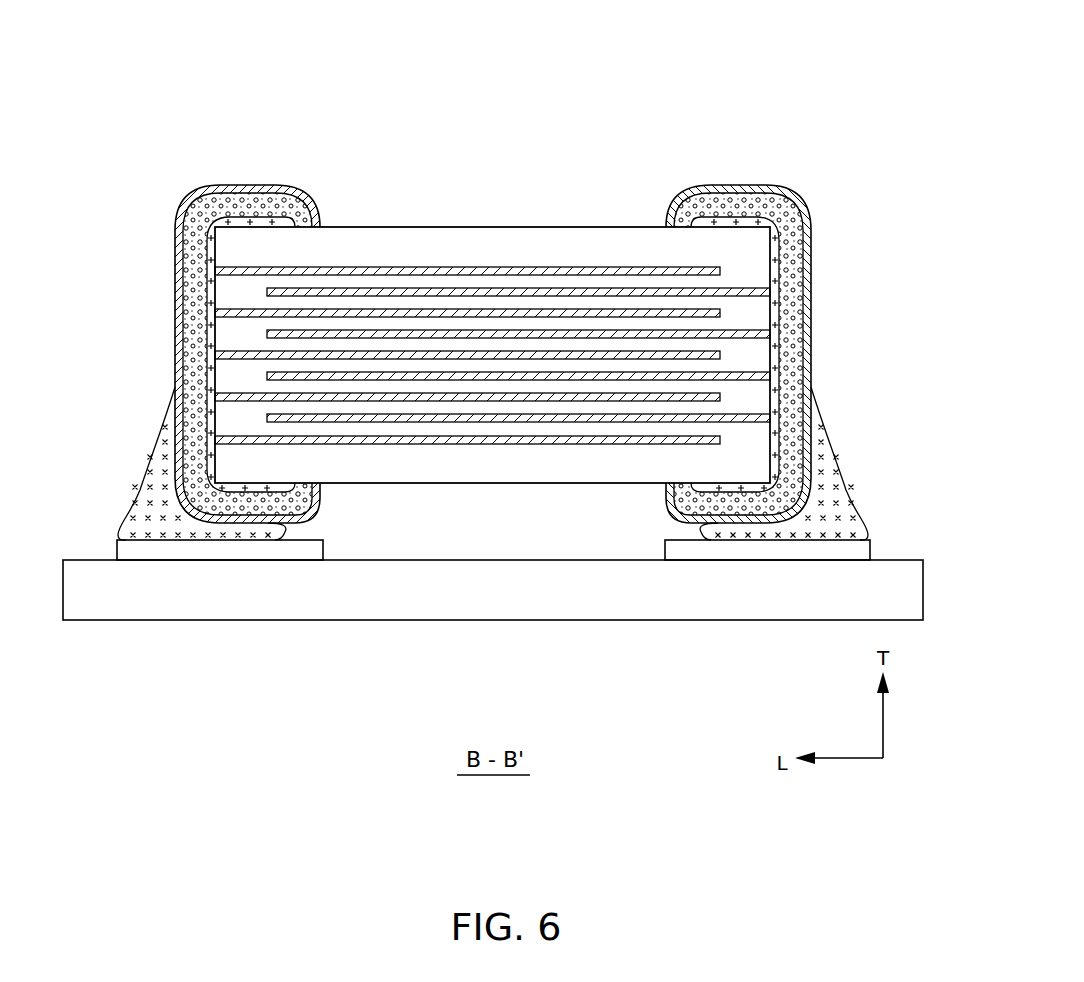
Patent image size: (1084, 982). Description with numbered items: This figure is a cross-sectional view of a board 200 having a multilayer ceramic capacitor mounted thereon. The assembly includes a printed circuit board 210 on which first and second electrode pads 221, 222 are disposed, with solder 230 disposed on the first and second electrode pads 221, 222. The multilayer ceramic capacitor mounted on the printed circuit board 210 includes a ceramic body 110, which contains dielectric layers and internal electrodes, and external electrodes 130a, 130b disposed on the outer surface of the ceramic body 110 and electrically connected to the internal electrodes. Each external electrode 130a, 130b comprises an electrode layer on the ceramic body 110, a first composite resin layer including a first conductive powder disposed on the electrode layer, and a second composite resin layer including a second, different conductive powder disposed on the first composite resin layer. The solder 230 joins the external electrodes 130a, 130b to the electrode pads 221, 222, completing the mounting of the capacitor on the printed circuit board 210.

The board having a multilayer ceramic capacitor mounted thereon 200 is at (520, 52).
The ceramic body 110 is at (495, 227).
The first external electrode 130a is at (245, 185).
The second external electrode 130b is at (740, 185).
The printed circuit board 210 is at (486, 590).
The first electrode pad 221 is at (245, 550).
The second electrode pad 222 is at (758, 550).
The solder 230 is at (160, 527).